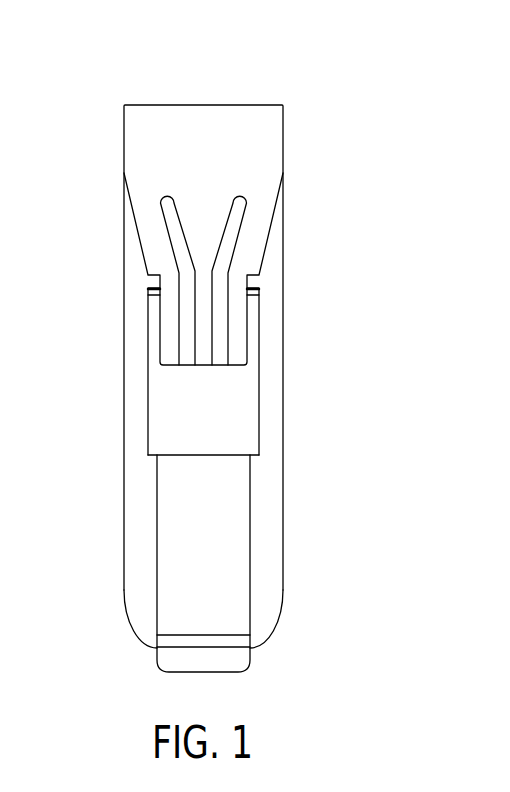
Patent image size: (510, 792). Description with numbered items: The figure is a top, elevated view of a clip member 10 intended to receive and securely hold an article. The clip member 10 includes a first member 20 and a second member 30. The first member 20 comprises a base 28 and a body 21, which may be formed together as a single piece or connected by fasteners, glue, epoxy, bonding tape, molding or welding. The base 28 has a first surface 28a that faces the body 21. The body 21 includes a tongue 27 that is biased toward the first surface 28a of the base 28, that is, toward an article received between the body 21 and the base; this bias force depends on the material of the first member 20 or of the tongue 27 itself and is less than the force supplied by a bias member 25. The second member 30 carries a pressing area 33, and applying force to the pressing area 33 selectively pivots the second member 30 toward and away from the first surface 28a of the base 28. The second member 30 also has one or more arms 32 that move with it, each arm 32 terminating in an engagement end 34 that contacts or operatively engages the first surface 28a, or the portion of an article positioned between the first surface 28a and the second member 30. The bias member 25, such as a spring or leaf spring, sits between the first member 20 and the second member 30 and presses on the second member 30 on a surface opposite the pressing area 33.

The clip member 10 is at (368, 72).
The first member 20 is at (255, 88).
The body 21 is at (277, 146).
The bias member 25 is at (205, 361).
The tongue 27 is at (160, 622).
The base 28 is at (284, 558).
The first surface 28a is at (278, 593).
The second member 30 is at (268, 457).
The arms 32 is at (148, 352).
The pressing area 33 is at (253, 438).
The engagement end 34 is at (146, 288).